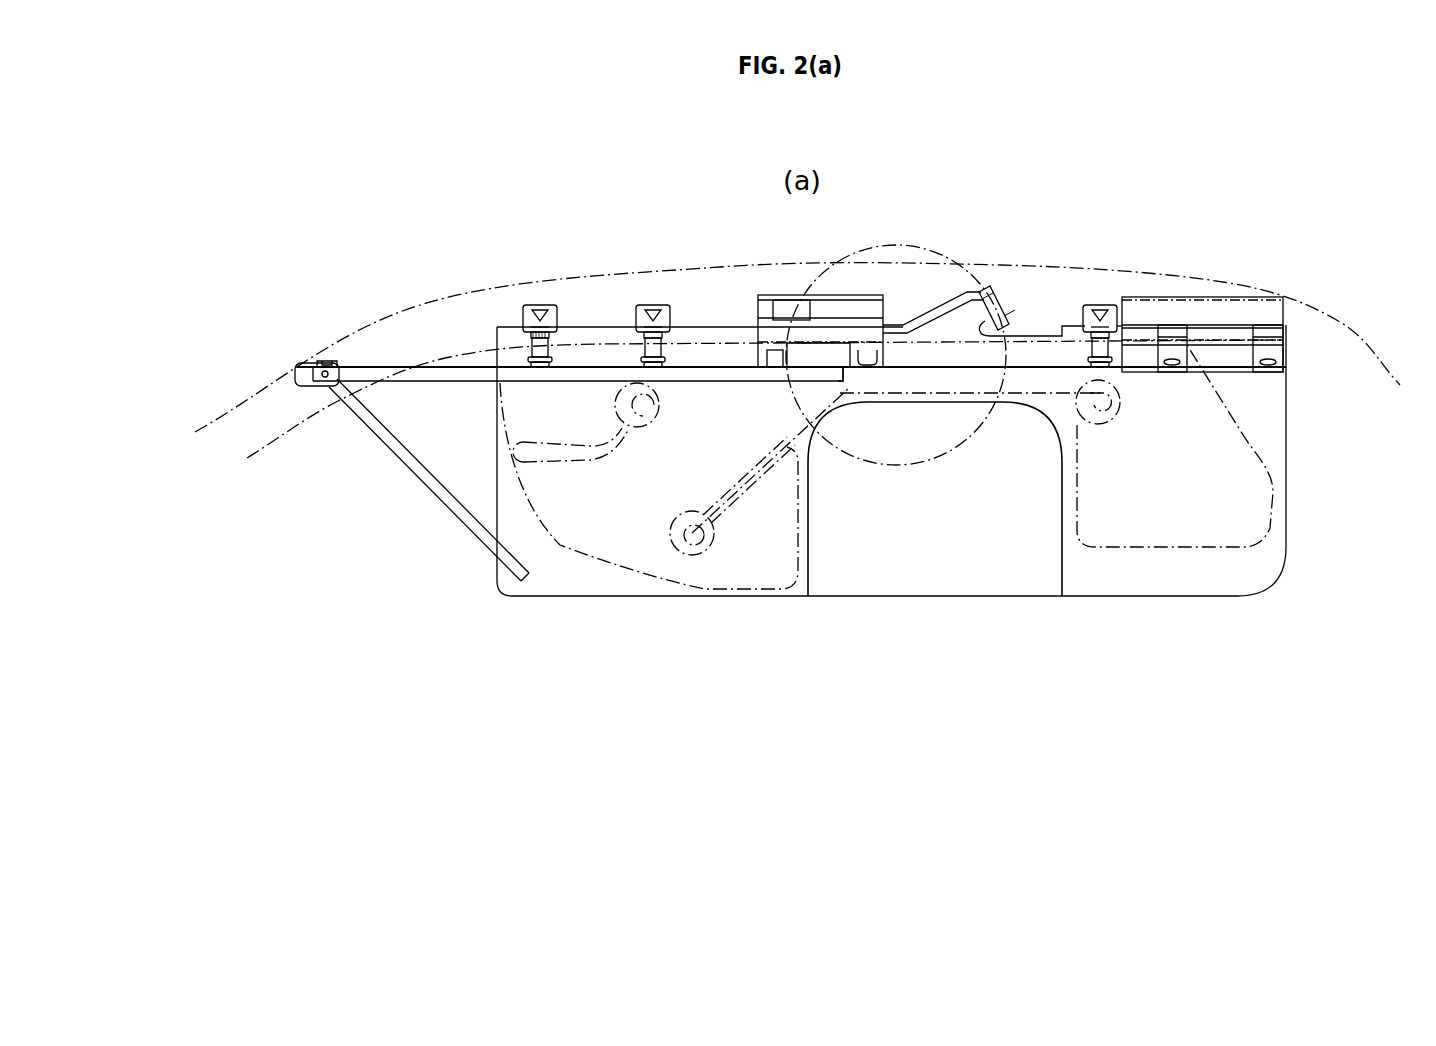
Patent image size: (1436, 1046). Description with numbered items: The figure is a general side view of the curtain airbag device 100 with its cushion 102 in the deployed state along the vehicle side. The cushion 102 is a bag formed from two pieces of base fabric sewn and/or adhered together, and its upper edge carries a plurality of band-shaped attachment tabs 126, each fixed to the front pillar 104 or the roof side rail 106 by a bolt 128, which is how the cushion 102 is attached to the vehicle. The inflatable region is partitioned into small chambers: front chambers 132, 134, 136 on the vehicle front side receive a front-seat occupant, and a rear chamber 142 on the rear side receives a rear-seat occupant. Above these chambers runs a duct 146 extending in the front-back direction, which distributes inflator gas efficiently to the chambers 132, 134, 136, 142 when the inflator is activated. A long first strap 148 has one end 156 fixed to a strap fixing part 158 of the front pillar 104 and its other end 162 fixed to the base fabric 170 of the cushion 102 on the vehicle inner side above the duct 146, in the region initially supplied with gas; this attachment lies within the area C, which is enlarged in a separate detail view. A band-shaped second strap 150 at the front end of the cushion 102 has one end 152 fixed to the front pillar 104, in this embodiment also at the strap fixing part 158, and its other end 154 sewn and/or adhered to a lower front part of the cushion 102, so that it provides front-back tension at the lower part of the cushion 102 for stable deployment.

The curtain airbag device 100 is at (1220, 260).
The cushion 102 is at (1287, 572).
The front pillar 104 is at (243, 413).
The roof side rail 106 is at (1040, 298).
The attachment tab 126 is at (552, 306).
The bolt 128 is at (536, 306).
The front chamber 132 is at (523, 412).
The front chamber 134 is at (600, 537).
The front chamber 136 is at (743, 572).
The rear chamber 142 is at (1240, 516).
The duct 146 is at (1137, 362).
The first strap 148 is at (713, 378).
The second strap 150 is at (455, 500).
The end of second strap 152 is at (333, 387).
The end of second strap 154 is at (518, 577).
The end of first strap 156 is at (337, 362).
The strap fixing part 158 is at (303, 380).
The end of first strap 162 is at (828, 383).
The base fabric 170 is at (1050, 353).
The area C is at (912, 248).